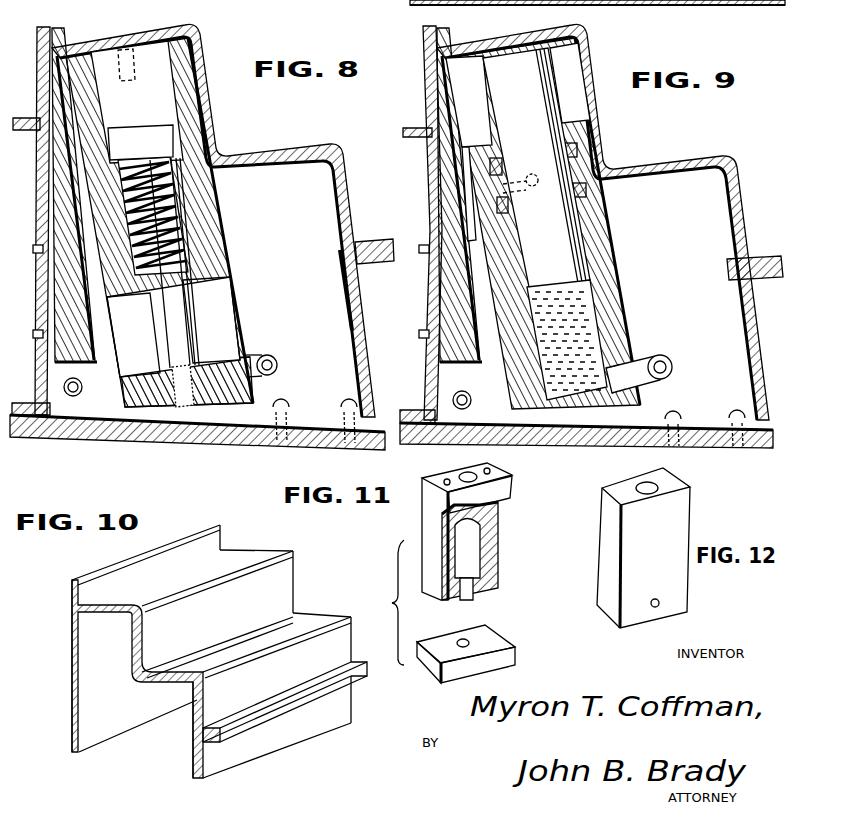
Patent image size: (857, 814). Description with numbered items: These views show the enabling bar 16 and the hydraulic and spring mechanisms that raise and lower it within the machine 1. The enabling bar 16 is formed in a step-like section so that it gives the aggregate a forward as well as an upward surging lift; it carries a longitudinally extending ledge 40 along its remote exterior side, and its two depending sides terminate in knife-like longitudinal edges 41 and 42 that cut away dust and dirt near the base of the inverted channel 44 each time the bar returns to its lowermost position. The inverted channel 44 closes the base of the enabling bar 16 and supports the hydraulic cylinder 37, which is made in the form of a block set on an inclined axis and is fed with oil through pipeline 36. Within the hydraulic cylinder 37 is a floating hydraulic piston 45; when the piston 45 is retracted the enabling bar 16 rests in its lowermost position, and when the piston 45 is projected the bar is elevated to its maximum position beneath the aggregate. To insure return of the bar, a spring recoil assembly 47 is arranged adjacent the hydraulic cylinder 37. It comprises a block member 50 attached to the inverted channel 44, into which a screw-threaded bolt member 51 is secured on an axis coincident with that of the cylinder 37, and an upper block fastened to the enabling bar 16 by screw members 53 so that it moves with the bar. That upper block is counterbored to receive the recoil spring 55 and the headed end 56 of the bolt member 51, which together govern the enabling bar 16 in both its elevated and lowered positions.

In FIG. 8, the base plate 1 is at (222, 445).
In FIG. 9, the base plate 1 is at (624, 5).
In FIG. 8, the enabling bar 16 is at (142, 34).
In FIG. 9, the enabling bar 16 is at (468, 48).
In FIG. 10, the enabling bar 16 is at (186, 548).
In FIG. 8, the pipeline 36 is at (278, 362).
In FIG. 9, the pipeline 36 is at (663, 354).
In FIG. 9, the hydraulic cylinder 37 is at (602, 252).
In FIG. 12, the hydraulic cylinder 37 is at (680, 522).
In FIG. 8, the ledge 40 is at (374, 242).
In FIG. 9, the ledge 40 is at (758, 258).
In FIG. 10, the ledge 40 is at (274, 705).
In FIG. 8, the knife-like edge 41 is at (78, 196).
In FIG. 9, the knife-like edge 41 is at (438, 371).
In FIG. 10, the knife-like edge 41 is at (70, 748).
In FIG. 8, the knife-like edge 42 is at (345, 330).
In FIG. 9, the knife-like edge 42 is at (745, 356).
In FIG. 10, the knife-like edge 42 is at (205, 776).
In FIG. 8, the inverted channel 44 is at (298, 410).
In FIG. 9, the inverted channel 44 is at (702, 420).
In FIG. 9, the hydraulic piston 45 is at (543, 177).
In FIG. 8, the spring recoil assembly 47 is at (214, 135).
In FIG. 11, the spring recoil assembly 47 is at (498, 530).
In FIG. 8, the block member 50 is at (219, 2).
In FIG. 9, the block member 50 is at (543, 223).
In FIG. 11, the block member 50 is at (505, 653).
In FIG. 8, the bolt member 51 is at (192, 352).
In FIG. 8, the screw member 53 is at (110, 34).
In FIG. 8, the recoil spring 55 is at (170, 205).
In FIG. 8, the headed end 56 is at (153, 126).